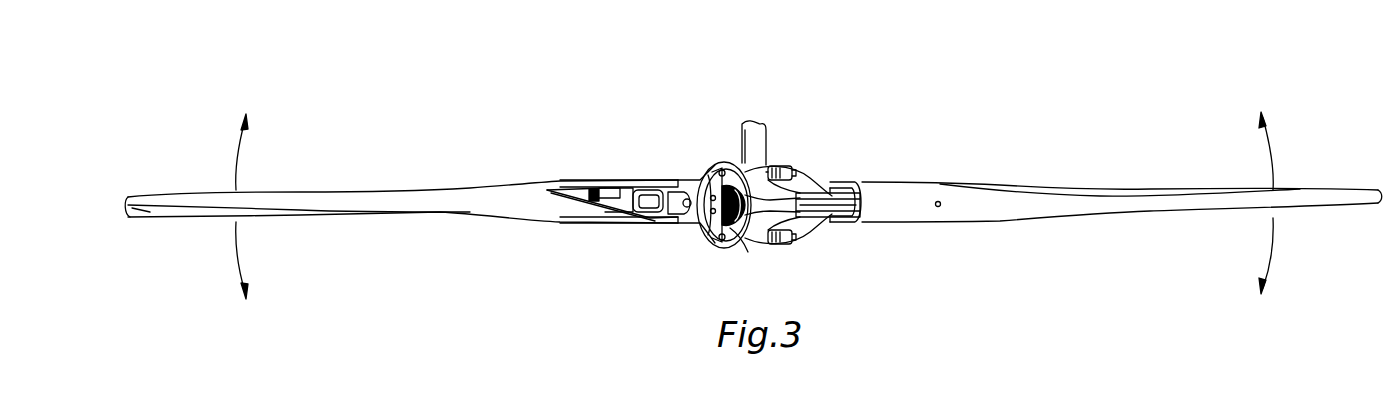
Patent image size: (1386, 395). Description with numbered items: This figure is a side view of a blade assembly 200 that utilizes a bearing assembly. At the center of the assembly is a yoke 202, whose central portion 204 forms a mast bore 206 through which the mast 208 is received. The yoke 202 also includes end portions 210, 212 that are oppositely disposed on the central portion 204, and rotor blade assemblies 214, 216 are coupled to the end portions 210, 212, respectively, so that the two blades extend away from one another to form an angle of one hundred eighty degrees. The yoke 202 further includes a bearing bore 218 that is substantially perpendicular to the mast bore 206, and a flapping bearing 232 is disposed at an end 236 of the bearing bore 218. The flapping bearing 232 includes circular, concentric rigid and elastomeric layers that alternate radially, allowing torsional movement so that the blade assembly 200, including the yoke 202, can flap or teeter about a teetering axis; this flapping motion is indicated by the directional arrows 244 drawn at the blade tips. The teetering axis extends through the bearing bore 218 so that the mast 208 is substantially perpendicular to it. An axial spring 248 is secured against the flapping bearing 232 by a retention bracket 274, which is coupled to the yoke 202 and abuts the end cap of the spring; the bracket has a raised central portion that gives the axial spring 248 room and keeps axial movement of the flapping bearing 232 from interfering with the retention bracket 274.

The blade assembly 200 is at (946, 113).
The yoke 202 is at (812, 232).
The central portion 204 is at (785, 244).
The mast bore 206 is at (808, 176).
The mast 208 is at (762, 140).
The end portion 210 is at (669, 180).
The end portion 212 is at (843, 200).
The rotor blade assembly 214 is at (410, 190).
The rotor blade assembly 216 is at (1185, 200).
The bearing bore 218 is at (748, 240).
The flapping bearing 232 is at (738, 180).
The end of bearing bore 236 is at (772, 240).
The directional arrows 244 is at (238, 158).
The axial spring 248 is at (733, 240).
The retention bracket 274 is at (708, 178).